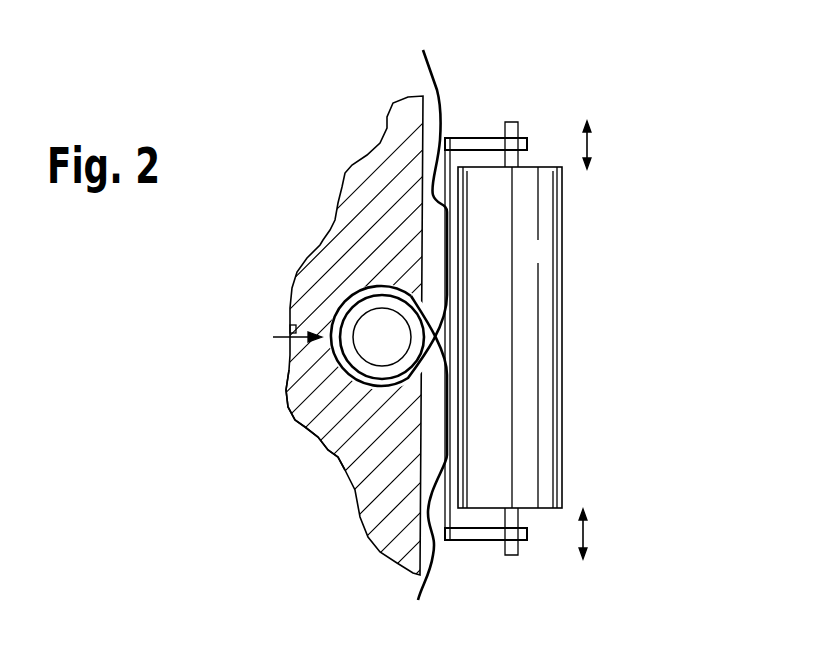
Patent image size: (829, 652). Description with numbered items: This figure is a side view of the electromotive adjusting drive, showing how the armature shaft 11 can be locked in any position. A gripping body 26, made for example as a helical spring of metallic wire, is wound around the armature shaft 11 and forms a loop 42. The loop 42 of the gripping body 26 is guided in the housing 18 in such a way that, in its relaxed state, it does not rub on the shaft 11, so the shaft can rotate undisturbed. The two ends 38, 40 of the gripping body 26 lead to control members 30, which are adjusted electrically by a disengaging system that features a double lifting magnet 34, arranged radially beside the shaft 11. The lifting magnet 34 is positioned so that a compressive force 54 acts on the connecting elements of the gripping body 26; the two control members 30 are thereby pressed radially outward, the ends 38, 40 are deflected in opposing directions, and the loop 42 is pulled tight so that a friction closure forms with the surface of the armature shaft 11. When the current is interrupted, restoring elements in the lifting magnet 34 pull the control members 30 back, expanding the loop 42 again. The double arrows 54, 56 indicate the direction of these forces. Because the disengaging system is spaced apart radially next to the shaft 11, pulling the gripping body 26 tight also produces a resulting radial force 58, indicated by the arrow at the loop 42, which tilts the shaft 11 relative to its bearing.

The armature shaft 11 is at (362, 332).
The housing 18 is at (350, 178).
The gripping body 26 is at (362, 404).
The control members 30 is at (512, 122).
The double lifting magnet 34 is at (556, 285).
The end of gripping body 38 is at (389, 203).
The end of gripping body 40 is at (423, 465).
The loop 42 is at (360, 393).
The compressive force 54 is at (590, 147).
The direction of movement 56 is at (588, 532).
The resulting radial force 58 is at (290, 328).